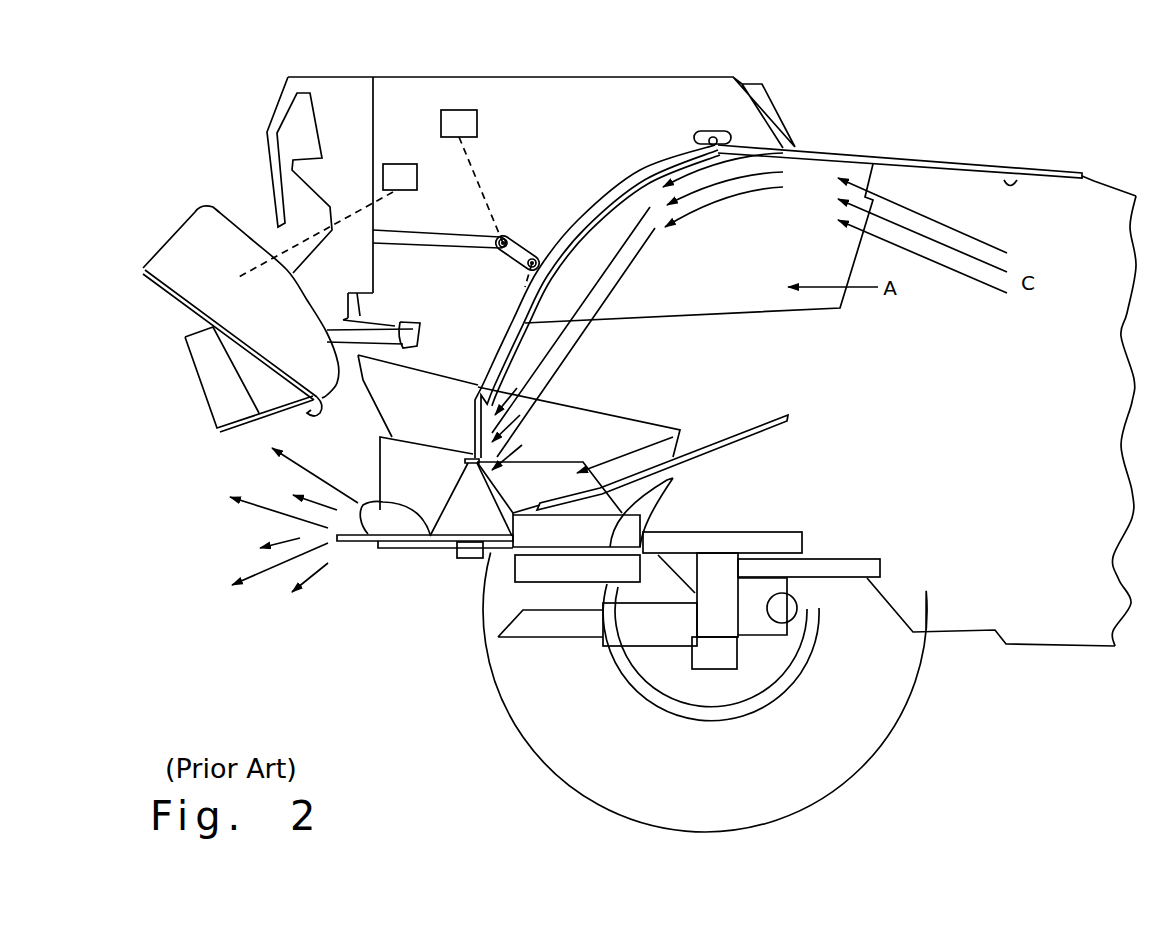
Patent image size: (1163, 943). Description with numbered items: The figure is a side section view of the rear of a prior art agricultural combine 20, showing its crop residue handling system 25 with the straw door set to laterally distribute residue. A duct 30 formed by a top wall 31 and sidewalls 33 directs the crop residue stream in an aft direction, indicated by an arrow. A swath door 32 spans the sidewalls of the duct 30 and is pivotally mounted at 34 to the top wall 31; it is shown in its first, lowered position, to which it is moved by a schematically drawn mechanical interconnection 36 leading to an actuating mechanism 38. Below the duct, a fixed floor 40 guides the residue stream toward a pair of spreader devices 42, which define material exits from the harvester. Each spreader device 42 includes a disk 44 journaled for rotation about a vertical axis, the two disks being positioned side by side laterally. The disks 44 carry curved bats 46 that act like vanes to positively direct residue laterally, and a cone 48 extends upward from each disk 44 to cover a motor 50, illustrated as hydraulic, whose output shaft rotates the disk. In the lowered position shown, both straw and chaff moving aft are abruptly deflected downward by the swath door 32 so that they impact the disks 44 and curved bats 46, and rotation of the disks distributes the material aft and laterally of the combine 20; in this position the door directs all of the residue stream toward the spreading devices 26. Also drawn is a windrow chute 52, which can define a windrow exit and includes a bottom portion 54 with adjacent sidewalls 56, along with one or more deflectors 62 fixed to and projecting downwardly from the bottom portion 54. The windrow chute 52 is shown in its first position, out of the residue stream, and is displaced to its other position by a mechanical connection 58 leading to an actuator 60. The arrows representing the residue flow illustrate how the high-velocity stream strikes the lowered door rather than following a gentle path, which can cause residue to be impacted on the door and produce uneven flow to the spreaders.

The combine 20 is at (1074, 75).
The crop residue handling system 25 is at (945, 447).
The spreading devices 26 is at (388, 587).
The duct 30 is at (962, 155).
The top wall 31 is at (1012, 182).
The swath door 32 is at (647, 183).
The sidewalls 33 is at (690, 280).
The pivot 34 is at (716, 136).
The mechanical interconnection 36 is at (480, 181).
The actuating mechanism 38 is at (459, 110).
The fixed floor 40 is at (770, 420).
The spreader devices 42 is at (465, 567).
The disks 44 is at (388, 545).
The curved bats 46 is at (380, 505).
The cone 48 is at (465, 493).
The motor 50 is at (462, 558).
The windrow chute 52 is at (168, 346).
The bottom portion 54 is at (175, 297).
The sidewalls 56 is at (168, 247).
The mechanical connection 58 is at (282, 247).
The actuator 60 is at (397, 176).
The deflectors 62 is at (223, 400).